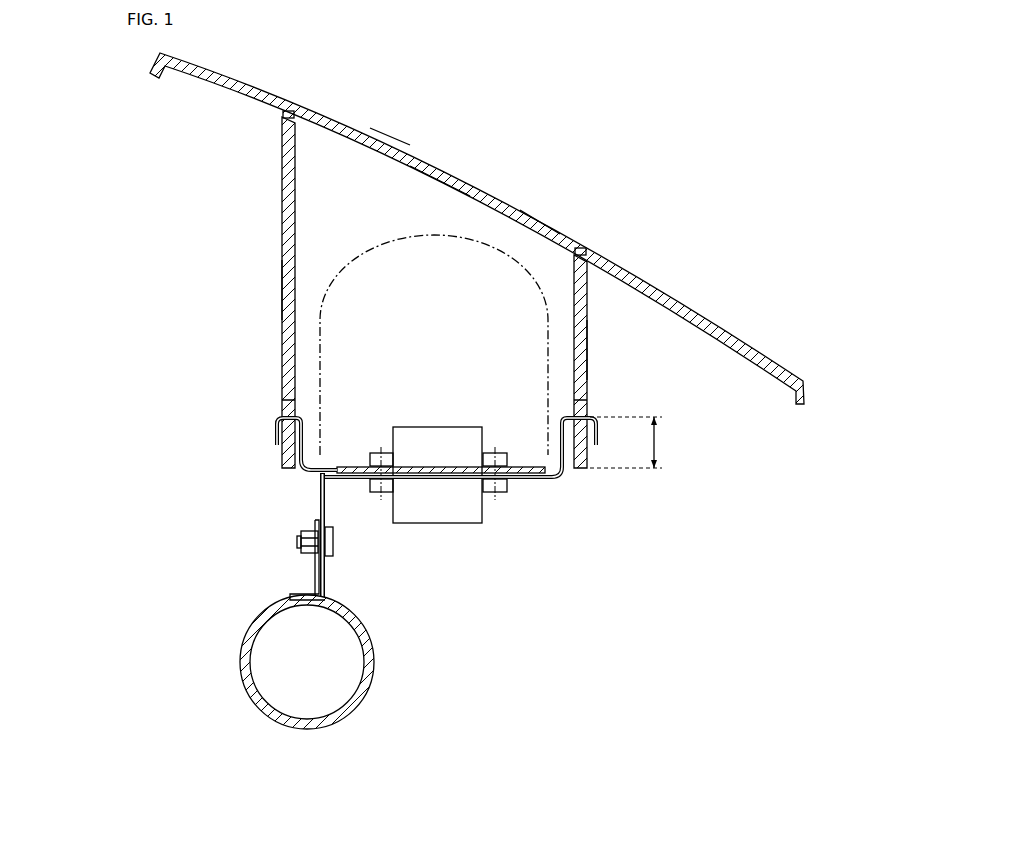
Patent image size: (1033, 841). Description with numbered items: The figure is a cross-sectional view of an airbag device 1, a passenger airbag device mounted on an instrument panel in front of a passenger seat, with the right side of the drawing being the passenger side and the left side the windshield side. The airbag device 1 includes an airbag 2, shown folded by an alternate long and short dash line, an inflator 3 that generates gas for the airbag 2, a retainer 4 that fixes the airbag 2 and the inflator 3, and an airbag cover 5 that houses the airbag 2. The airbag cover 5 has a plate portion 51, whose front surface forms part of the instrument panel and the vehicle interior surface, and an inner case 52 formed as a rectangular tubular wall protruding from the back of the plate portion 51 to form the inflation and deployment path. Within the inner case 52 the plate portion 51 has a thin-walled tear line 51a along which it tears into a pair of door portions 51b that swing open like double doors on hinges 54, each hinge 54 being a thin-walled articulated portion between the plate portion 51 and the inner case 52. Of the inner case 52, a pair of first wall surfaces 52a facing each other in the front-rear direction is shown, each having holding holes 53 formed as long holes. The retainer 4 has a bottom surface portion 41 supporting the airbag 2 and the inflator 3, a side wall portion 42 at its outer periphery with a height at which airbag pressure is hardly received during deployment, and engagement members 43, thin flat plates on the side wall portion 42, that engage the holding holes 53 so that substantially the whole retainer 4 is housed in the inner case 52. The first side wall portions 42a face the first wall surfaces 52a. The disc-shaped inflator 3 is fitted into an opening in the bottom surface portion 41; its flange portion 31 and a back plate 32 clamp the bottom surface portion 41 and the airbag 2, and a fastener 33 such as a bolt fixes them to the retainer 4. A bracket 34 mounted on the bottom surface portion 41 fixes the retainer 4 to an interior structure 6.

The airbag device 1 is at (534, 131).
The airbag 2 is at (372, 246).
The inflator 3 is at (440, 525).
The flange portion 31 is at (438, 480).
The back plate 32 is at (360, 467).
The fastener 33 is at (381, 494).
The bracket 34 is at (320, 502).
The retainer 4 is at (297, 472).
The bottom surface portion 41 is at (537, 480).
The side wall portion 42 is at (303, 440).
The first side wall portion 42a is at (434, 444).
The engagement member 43 is at (277, 436).
The airbag cover 5 is at (181, 124).
The plate portion 51 is at (266, 91).
The tear line 51a is at (435, 180).
The door portion 51b is at (390, 138).
The inner case 52 is at (255, 205).
The first wall surface 52a is at (282, 292).
The holding hole 53 is at (282, 407).
The hinge 54 is at (283, 123).
The interior structure 6 is at (240, 662).